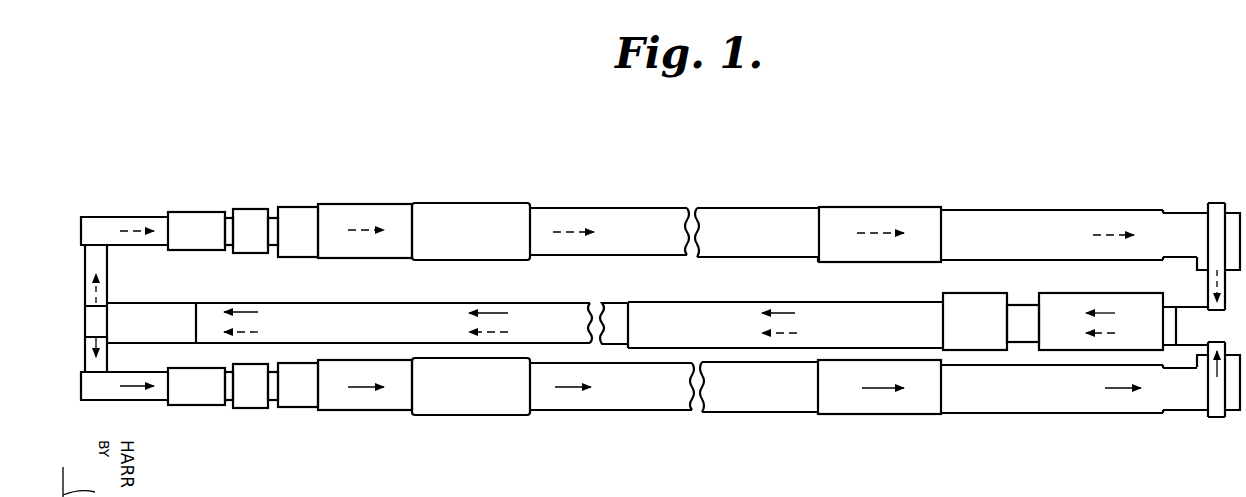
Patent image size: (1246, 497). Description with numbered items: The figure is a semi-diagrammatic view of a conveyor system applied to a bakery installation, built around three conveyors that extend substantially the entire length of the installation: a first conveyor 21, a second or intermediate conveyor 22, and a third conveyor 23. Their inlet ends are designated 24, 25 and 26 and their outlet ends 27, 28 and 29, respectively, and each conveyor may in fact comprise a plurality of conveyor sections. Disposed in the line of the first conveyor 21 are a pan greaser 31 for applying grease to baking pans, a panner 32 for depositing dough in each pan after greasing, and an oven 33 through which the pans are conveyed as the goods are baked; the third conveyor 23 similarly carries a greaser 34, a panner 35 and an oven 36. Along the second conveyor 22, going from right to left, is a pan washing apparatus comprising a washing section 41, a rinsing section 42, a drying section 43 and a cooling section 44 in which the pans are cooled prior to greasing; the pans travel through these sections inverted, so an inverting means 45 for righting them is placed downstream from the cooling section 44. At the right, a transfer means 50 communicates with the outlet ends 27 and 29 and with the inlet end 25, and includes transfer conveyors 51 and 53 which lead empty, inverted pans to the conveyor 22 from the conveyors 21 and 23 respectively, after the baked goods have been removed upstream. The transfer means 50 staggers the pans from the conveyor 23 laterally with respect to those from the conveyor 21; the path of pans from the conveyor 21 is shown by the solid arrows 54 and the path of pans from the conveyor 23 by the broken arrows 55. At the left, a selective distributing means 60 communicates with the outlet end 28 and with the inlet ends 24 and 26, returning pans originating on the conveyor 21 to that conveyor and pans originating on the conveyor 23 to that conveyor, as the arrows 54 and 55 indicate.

The first conveyor 21 is at (736, 414).
The second conveyor 22 is at (665, 351).
The third conveyor 23 is at (748, 204).
The inlet end 24 is at (98, 400).
The inlet end 25 is at (1197, 307).
The inlet end 26 is at (100, 224).
The outlet end 27 is at (1193, 411).
The outlet end 28 is at (117, 305).
The outlet end 29 is at (1198, 216).
The pan greaser 31 is at (200, 400).
The panner 32 is at (258, 405).
The oven 33 is at (640, 411).
The greaser 34 is at (190, 218).
The panner 35 is at (250, 211).
The oven 36 is at (660, 208).
The washing section 41 is at (1100, 295).
The rinsing section 42 is at (975, 294).
The drying section 43 is at (812, 302).
The cooling section 44 is at (400, 303).
The inverting means 45 is at (186, 304).
The transfer means 50 is at (1210, 327).
The transfer conveyor 51 is at (1218, 415).
The transfer conveyor 53 is at (1217, 210).
The solid arrows 54 is at (575, 390).
The broken arrows 55 is at (571, 231).
The selective distributing means 60 is at (80, 311).